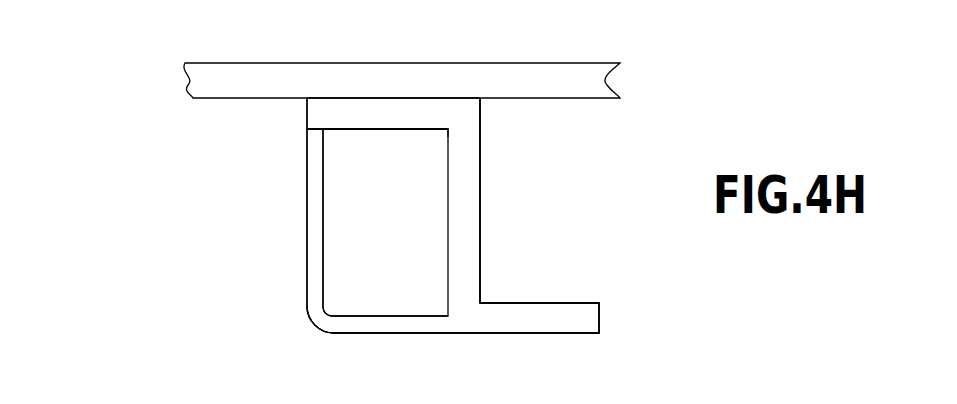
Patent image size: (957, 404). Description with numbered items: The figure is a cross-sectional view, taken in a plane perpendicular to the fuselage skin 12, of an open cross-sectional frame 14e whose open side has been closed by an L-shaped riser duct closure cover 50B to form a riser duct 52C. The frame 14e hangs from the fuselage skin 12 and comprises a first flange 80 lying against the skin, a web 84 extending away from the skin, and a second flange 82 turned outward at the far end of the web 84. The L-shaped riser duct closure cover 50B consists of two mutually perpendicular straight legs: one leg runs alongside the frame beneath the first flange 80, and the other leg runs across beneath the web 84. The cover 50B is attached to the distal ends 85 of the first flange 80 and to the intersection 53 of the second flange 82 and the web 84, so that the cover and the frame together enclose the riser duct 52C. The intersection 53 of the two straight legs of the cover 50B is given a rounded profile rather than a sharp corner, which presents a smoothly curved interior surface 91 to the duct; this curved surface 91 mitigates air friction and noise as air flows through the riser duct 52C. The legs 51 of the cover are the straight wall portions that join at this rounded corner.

The fuselage skin 12 is at (210, 100).
The riser duct 52C is at (266, 189).
The L-shaped riser duct closure cover 50B is at (310, 290).
The first flange 80 is at (367, 115).
The distal ends 85 is at (327, 113).
The open cross-sectional frame 14e is at (500, 160).
The web 84 is at (467, 245).
The second flange 82 is at (507, 327).
The intersection 53 is at (447, 130).
The side wall 51 is at (317, 208).
The smoothly curved interior surface 91 is at (325, 312).